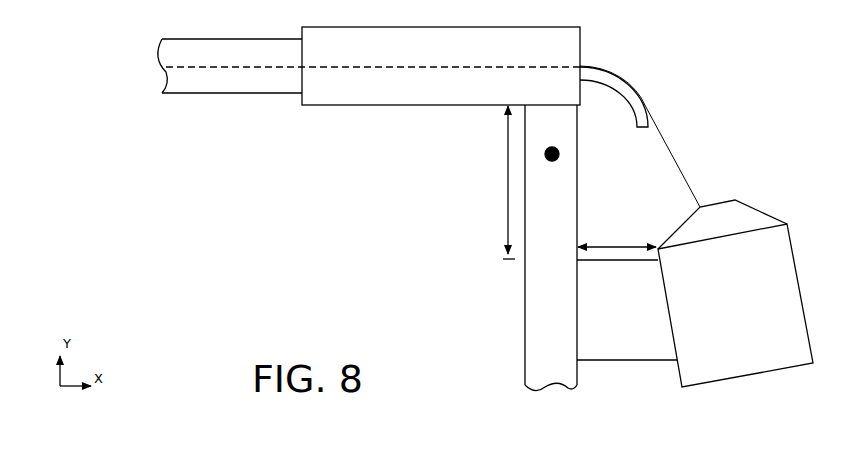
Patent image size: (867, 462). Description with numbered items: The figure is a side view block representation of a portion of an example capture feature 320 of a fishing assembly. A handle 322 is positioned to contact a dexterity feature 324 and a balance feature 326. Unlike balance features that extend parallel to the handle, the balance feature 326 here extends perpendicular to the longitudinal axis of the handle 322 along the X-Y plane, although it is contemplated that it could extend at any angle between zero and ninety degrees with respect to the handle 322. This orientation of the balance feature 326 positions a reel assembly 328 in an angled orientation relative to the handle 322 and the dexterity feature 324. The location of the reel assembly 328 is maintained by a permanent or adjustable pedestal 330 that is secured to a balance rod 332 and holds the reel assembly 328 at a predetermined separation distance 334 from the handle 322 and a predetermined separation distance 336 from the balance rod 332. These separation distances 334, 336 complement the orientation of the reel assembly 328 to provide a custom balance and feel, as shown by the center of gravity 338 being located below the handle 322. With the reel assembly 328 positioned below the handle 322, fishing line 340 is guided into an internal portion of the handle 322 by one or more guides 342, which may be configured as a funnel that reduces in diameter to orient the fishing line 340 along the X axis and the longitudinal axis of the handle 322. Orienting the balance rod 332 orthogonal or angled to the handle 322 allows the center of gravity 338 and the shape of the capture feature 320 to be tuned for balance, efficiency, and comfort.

The capture feature 320 is at (694, 43).
The handle 322 is at (344, 27).
The dexterity feature 324 is at (220, 39).
The balance feature 326 is at (498, 297).
The reel assembly 328 is at (750, 313).
The pedestal 330 is at (636, 318).
The balance rod 332 is at (570, 358).
The separation distance 334 is at (496, 182).
The separation distance 336 is at (617, 237).
The center of gravity 338 is at (556, 160).
The fishing line 340 is at (444, 66).
The guide 342 is at (627, 101).